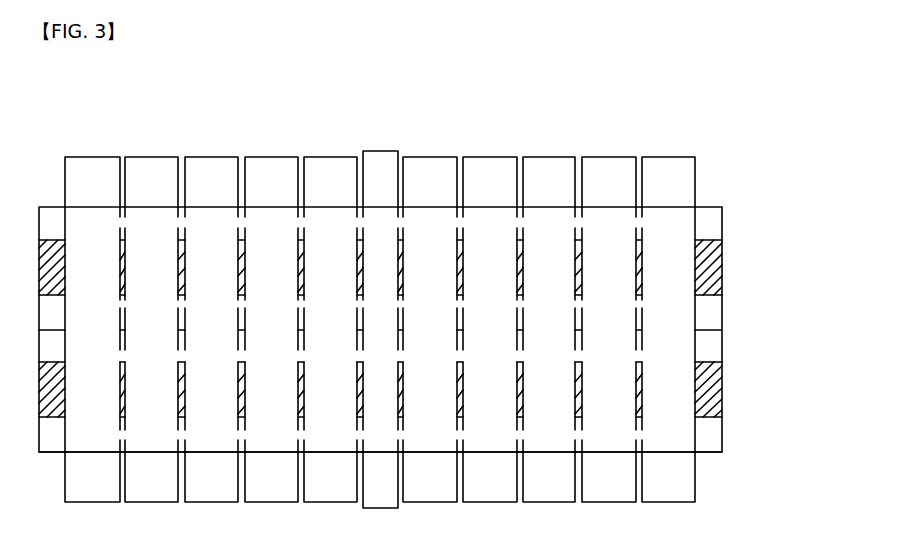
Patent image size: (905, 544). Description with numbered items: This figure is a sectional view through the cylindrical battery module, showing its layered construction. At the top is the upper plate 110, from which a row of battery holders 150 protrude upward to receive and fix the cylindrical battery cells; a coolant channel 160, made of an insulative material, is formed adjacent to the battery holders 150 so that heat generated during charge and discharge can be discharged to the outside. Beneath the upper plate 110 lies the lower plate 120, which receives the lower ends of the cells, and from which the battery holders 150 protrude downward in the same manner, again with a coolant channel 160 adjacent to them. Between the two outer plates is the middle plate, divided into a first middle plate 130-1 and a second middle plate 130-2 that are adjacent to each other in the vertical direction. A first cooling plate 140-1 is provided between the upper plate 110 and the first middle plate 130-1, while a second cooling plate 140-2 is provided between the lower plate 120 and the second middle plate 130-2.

The upper plate 110 is at (715, 225).
The lower plate 120 is at (715, 440).
The first middle plate 130-1 is at (714, 308).
The second middle plate 130-2 is at (714, 348).
The first cooling plate 140-1 is at (714, 278).
The second cooling plate 140-2 is at (714, 392).
The battery holder 150 is at (487, 163).
The coolant channel 160 is at (378, 160).